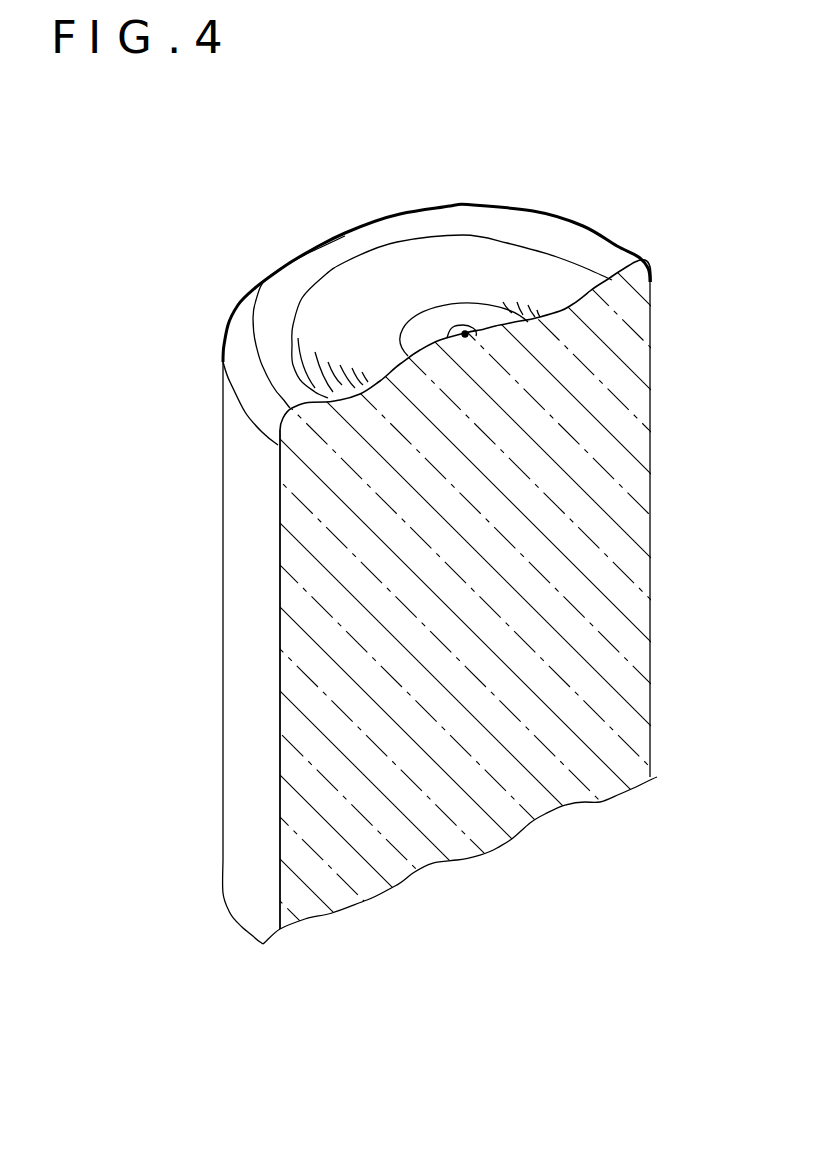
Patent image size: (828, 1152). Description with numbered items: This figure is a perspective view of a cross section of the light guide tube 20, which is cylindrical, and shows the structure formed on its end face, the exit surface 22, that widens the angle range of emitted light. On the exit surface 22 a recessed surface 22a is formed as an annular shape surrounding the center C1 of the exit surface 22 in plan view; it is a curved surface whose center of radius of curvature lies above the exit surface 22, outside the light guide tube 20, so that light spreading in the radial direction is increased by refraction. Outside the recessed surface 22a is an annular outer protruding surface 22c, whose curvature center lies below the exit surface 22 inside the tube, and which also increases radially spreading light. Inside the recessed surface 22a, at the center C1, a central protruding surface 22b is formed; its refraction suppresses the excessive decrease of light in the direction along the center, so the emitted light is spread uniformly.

The light guide tube 20 is at (603, 802).
The exit surface 22 is at (474, 204).
The recessed surface 22a is at (345, 300).
The central protruding surface 22b is at (482, 310).
The outer protruding surface 22c is at (253, 303).
The center of the exit surface C1 is at (465, 333).